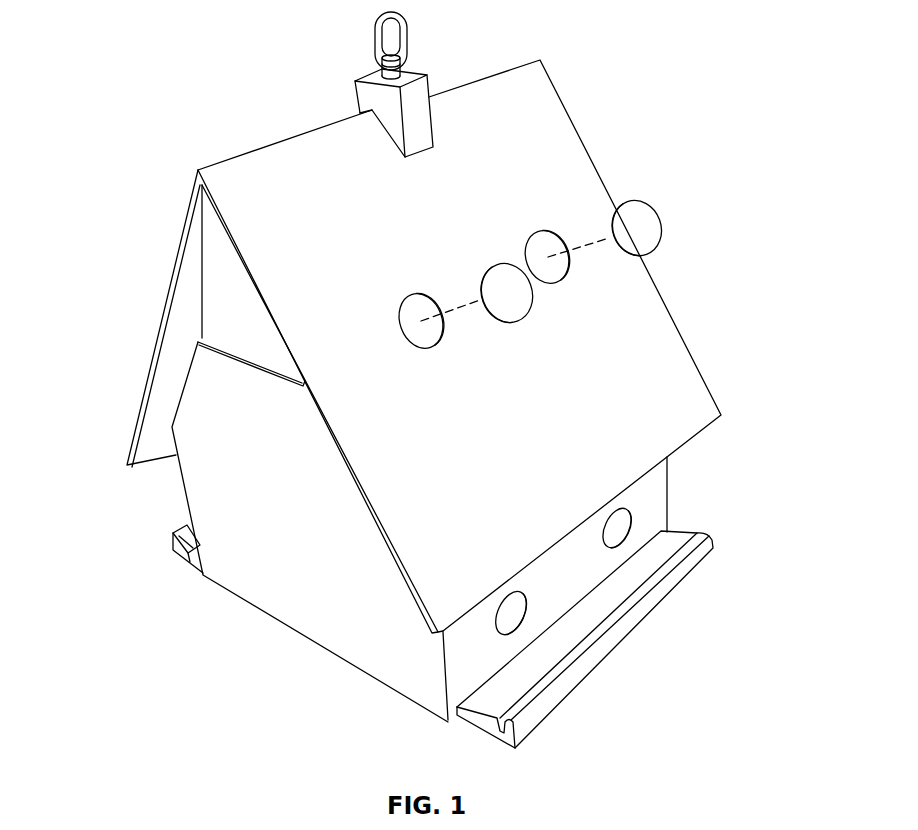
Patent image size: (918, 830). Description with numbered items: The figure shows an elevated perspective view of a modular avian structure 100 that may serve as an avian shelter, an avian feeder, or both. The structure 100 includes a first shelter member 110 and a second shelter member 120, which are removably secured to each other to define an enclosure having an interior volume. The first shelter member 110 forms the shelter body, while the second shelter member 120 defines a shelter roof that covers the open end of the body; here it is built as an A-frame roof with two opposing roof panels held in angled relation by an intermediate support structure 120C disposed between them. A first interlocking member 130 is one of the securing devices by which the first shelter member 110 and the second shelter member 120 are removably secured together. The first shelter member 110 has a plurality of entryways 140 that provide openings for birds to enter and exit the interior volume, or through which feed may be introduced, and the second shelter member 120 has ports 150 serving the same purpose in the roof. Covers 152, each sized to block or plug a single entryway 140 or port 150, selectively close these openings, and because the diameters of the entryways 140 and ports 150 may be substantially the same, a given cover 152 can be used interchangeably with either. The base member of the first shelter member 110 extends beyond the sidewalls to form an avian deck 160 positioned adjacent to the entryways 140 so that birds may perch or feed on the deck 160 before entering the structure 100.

The modular avian structure 100 is at (124, 46).
The first shelter member 110 is at (256, 607).
The second shelter member 120 is at (592, 153).
The intermediate support structure 120C is at (217, 283).
The first interlocking member 130 is at (375, 45).
The entryways 140 is at (642, 514).
The ports 150 is at (405, 288).
The covers 152 is at (513, 308).
The avian decks 160 is at (713, 548).